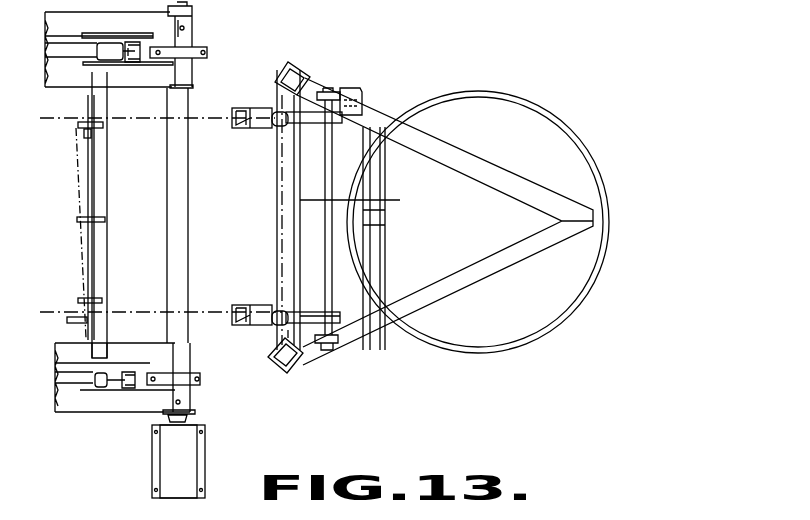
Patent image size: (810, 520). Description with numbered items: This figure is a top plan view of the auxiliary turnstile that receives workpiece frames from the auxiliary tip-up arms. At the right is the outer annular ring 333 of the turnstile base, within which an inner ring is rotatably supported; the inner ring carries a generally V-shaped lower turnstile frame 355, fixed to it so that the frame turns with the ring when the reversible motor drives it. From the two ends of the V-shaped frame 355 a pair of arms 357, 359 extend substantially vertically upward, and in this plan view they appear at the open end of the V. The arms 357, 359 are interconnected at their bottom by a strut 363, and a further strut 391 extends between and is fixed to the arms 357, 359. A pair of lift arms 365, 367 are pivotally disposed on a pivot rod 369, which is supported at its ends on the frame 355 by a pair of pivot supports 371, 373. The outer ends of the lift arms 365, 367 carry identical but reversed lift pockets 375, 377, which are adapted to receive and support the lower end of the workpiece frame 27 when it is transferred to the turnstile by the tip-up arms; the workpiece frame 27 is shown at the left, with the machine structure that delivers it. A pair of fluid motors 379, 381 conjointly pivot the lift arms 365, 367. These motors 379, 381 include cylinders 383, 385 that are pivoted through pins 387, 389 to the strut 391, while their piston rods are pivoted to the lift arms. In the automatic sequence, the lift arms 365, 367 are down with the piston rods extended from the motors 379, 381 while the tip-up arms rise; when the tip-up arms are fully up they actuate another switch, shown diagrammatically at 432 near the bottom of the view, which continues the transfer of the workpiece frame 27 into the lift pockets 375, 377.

The workpiece frame 27 is at (0, 470).
The outer annular ring 333 is at (540, 108).
The V-shaped lower turnstile frame 355 is at (512, 152).
The arm 357 is at (297, 65).
The arm 359 is at (292, 373).
The strut 363 is at (368, 198).
The lift arm 365 is at (310, 125).
The lift arm 367 is at (318, 320).
The pivot rod 369 is at (337, 247).
The pivot support 371 is at (338, 90).
The pivot support 373 is at (340, 345).
The lift pocket 375 is at (270, 123).
The lift pocket 377 is at (255, 307).
The fluid motor 379 is at (283, 128).
The fluid motor 381 is at (270, 335).
The cylinder 383 is at (352, 200).
The cylinder 385 is at (280, 312).
The pin 387 is at (372, 108).
The pin 389 is at (310, 343).
The strut 391 is at (280, 237).
The switch 432 is at (180, 455).